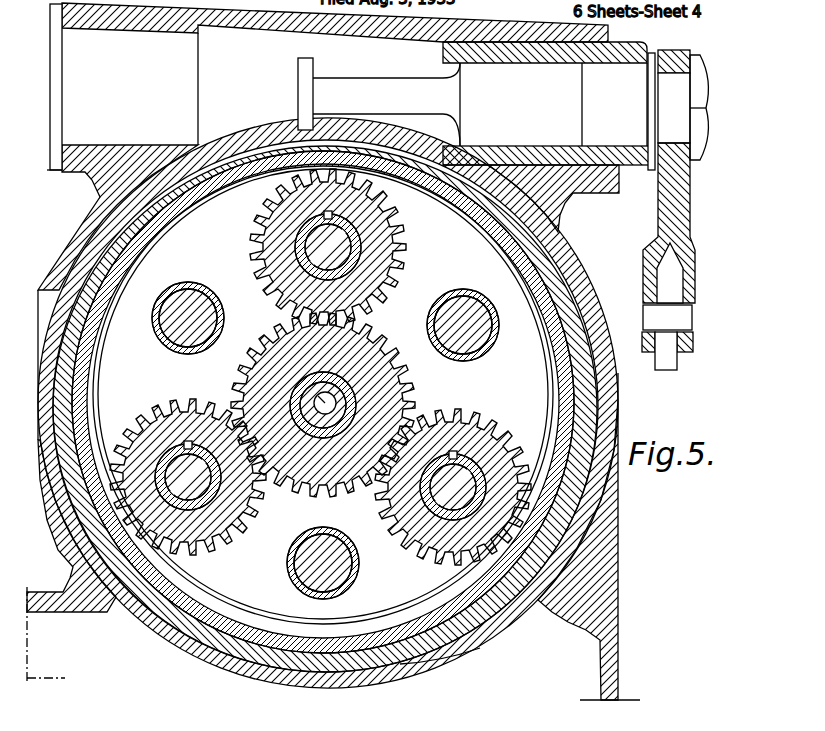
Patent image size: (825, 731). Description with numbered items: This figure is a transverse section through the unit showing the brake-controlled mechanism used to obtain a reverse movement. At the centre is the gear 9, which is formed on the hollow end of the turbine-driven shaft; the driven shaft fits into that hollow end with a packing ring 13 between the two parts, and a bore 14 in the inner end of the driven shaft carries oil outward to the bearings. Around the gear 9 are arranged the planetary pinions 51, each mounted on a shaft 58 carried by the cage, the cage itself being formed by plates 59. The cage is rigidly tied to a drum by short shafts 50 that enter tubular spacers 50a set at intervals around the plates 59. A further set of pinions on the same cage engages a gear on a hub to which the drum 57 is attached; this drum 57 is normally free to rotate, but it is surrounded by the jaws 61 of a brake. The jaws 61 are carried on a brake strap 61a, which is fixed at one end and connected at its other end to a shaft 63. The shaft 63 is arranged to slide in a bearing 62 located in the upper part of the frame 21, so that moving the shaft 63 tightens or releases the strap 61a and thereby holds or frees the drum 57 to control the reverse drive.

The gear teeth 9 is at (396, 399).
The packing ring 13 is at (332, 377).
The bore 14 is at (318, 398).
The frame 21 is at (262, 15).
The short shafts 50 is at (185, 284).
The tubular spacers 50a is at (206, 289).
The pinions 51 is at (397, 224).
The drum 57 is at (430, 627).
The shafts 58 is at (338, 255).
The plates 59 is at (382, 623).
The jaws 61 is at (340, 675).
The brake strap 61a is at (427, 632).
The bearing 62 is at (443, 48).
The shaft 63 is at (345, 88).